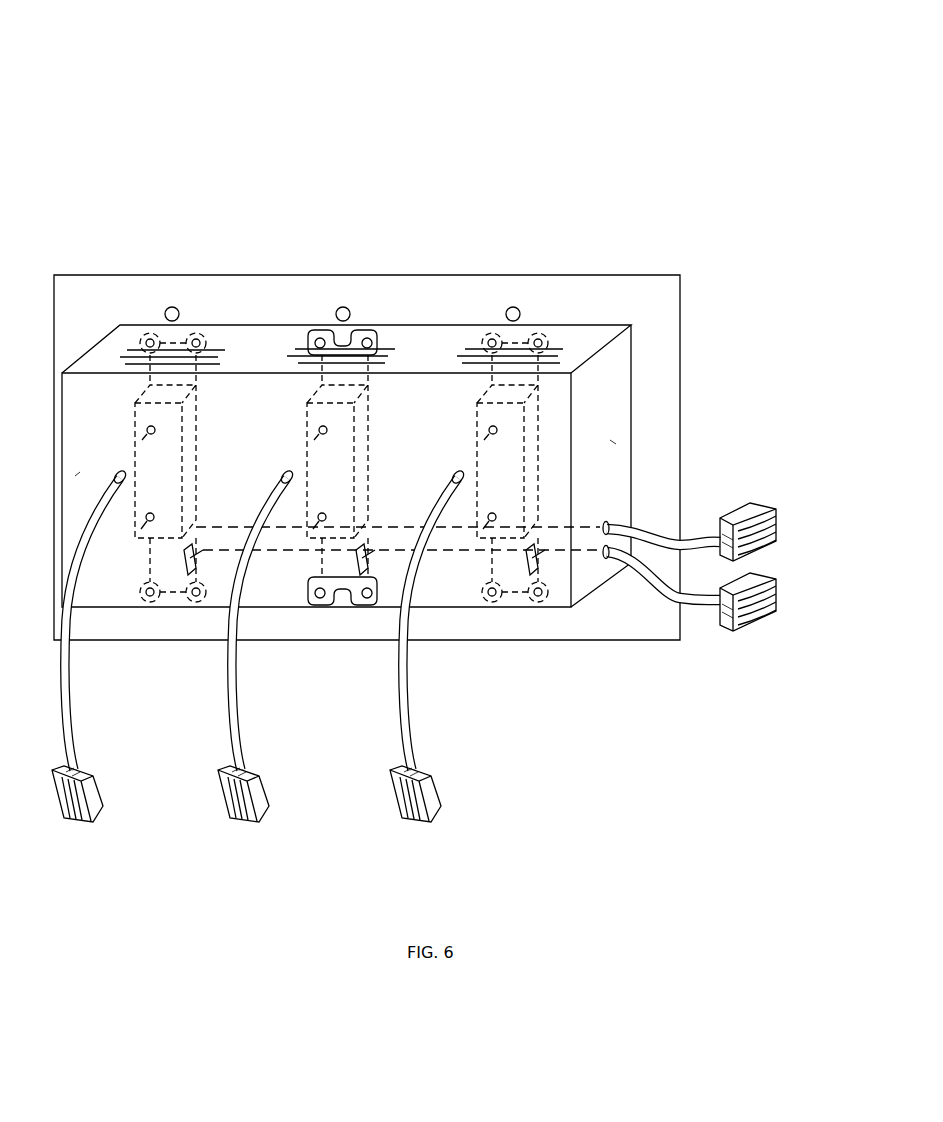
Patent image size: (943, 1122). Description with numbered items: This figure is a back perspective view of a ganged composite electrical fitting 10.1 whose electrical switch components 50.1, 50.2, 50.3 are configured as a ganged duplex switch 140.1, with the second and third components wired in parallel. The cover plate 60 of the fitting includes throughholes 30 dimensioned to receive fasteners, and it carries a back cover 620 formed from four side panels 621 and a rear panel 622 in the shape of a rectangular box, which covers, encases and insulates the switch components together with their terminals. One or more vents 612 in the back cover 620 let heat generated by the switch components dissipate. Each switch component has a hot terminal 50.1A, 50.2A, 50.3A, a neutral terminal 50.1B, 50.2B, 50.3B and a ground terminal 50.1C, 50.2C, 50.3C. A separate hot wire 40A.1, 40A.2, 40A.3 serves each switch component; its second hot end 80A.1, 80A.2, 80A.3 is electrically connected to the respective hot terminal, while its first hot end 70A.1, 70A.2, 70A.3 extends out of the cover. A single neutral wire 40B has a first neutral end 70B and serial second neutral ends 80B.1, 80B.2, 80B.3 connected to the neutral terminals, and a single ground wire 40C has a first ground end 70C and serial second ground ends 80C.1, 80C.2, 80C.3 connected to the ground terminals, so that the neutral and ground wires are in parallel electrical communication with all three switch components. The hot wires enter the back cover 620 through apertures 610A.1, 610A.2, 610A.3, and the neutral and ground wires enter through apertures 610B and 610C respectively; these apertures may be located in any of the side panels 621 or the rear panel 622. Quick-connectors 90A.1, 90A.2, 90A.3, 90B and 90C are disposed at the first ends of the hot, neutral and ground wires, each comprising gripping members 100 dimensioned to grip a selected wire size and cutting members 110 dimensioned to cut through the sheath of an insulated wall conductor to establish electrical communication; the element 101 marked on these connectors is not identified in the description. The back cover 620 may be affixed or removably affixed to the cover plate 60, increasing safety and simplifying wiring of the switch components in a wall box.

The ganged duplex switch 140.1 is at (99, 46).
The ganged composite electrical fitting 10.1 is at (120, 85).
The cover plate 60 is at (672, 352).
The vent 612 is at (553, 350).
The throughhole 30 is at (172, 307).
The electrical switch component 50.1 is at (176, 481).
The electrical switch component 50.2 is at (348, 481).
The electrical switch component 50.3 is at (518, 481).
The hot terminal 50.1A is at (109, 314).
The second hot end 80A.1 is at (147, 428).
The hot terminal 50.2A is at (278, 314).
The second hot end 80A.2 is at (319, 428).
The hot terminal 50.3A is at (449, 314).
The second hot end 80A.3 is at (489, 428).
The neutral terminal 50.1B is at (163, 608).
The second neutral end 80B.1 is at (153, 521).
The neutral terminal 50.2B is at (331, 608).
The second neutral end 80B.2 is at (325, 521).
The neutral terminal 50.3B is at (503, 608).
The second neutral end 80B.3 is at (495, 521).
The ground terminal 50.1C is at (194, 649).
The second ground end 80C.1 is at (193, 563).
The ground terminal 50.2C is at (363, 649).
The second ground end 80C.2 is at (365, 563).
The ground terminal 50.3C is at (533, 649).
The second ground end 80C.3 is at (535, 563).
The aperture 610A.1 is at (113, 470).
The aperture 610A.2 is at (285, 470).
The aperture 610A.3 is at (456, 475).
The aperture 610B is at (605, 517).
The aperture 610C is at (603, 557).
The hot wire 40A.1 is at (129, 781).
The first hot end 70A.1 is at (76, 757).
The hot wire 40A.2 is at (295, 781).
The first hot end 70A.2 is at (243, 757).
The hot wire 40A.3 is at (462, 781).
The first hot end 70A.3 is at (414, 757).
The neutral wire 40B is at (728, 510).
The first neutral end 70B is at (713, 535).
The ground wire 40C is at (726, 642).
The first ground end 70C is at (712, 603).
The quick-connector 90A.1 is at (122, 813).
The quick-connector 90A.2 is at (288, 813).
The quick-connector 90A.3 is at (455, 813).
The quick-connector 90B is at (760, 517).
The quick-connector 90C is at (759, 627).
The gripping member 100 is at (787, 543).
The plug contact 101 is at (304, 849).
The cutting member 110 is at (86, 825).
The back cover 620 is at (428, 673).
The side panel 621 is at (613, 442).
The rear panel 622 is at (78, 474).